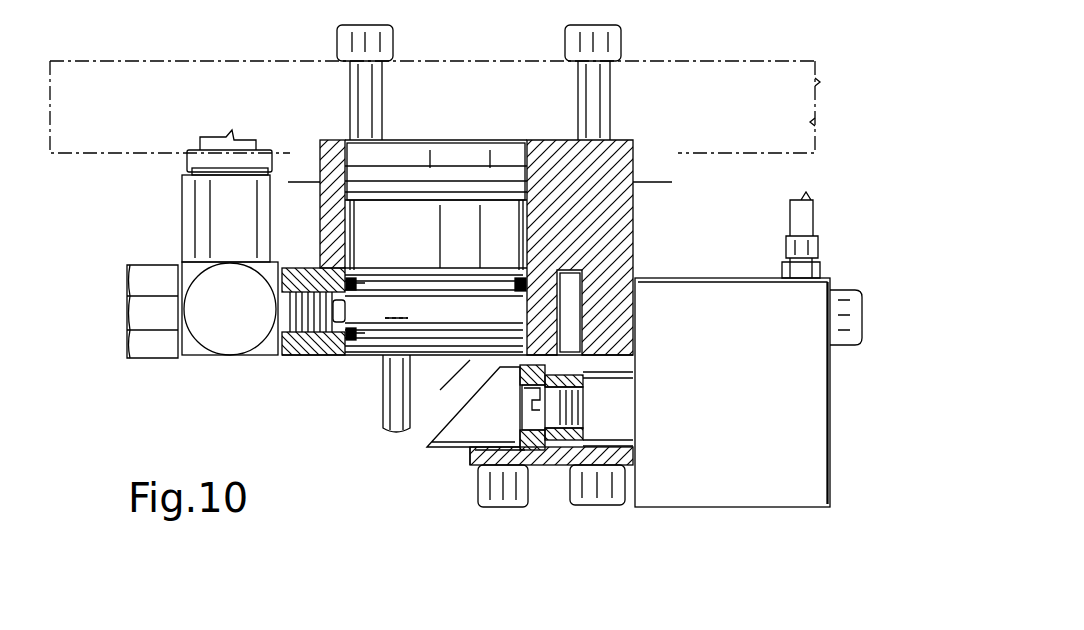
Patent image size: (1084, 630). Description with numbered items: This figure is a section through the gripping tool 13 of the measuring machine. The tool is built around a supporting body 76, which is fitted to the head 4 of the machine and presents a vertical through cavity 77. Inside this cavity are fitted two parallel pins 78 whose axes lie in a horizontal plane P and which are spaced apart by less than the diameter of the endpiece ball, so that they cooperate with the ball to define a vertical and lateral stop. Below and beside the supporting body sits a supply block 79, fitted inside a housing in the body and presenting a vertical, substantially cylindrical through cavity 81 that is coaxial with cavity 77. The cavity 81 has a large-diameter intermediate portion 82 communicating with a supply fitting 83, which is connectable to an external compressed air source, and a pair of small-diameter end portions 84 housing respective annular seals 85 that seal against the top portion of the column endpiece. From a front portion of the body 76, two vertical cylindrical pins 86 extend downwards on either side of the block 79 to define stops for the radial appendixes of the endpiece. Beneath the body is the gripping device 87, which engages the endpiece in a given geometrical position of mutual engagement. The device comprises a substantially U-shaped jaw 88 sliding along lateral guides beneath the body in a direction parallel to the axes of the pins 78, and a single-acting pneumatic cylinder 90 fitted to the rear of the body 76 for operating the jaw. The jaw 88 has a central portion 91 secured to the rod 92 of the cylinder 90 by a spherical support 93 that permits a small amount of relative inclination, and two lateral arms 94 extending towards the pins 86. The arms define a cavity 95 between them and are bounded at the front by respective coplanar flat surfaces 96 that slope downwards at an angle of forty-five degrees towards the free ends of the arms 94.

The head 4 is at (641, 72).
The horizontal plane P is at (641, 182).
The gripping tool 13 is at (695, 230).
The supporting body 76 is at (559, 150).
The vertical through cavity 77 is at (522, 158).
The parallel pins 78 is at (418, 170).
The supply block 79 is at (308, 360).
The through cavity 81 is at (440, 306).
The large-diameter intermediate portion 82 is at (513, 288).
The supply fitting 83 is at (220, 328).
The small-diameter end portions 84 is at (351, 280).
The annular seals 85 is at (352, 352).
The vertical cylindrical pins 86 is at (395, 398).
The gripping device 87 is at (552, 482).
The U-shaped jaw 88 is at (484, 458).
The single-acting pneumatic cylinder 90 is at (695, 483).
The central portion 91 is at (548, 452).
The rod 92 is at (637, 414).
The spherical support 93 is at (568, 447).
The lateral arms 94 is at (460, 437).
The cavity 95 is at (518, 388).
The coplanar flat surfaces 96 is at (443, 414).